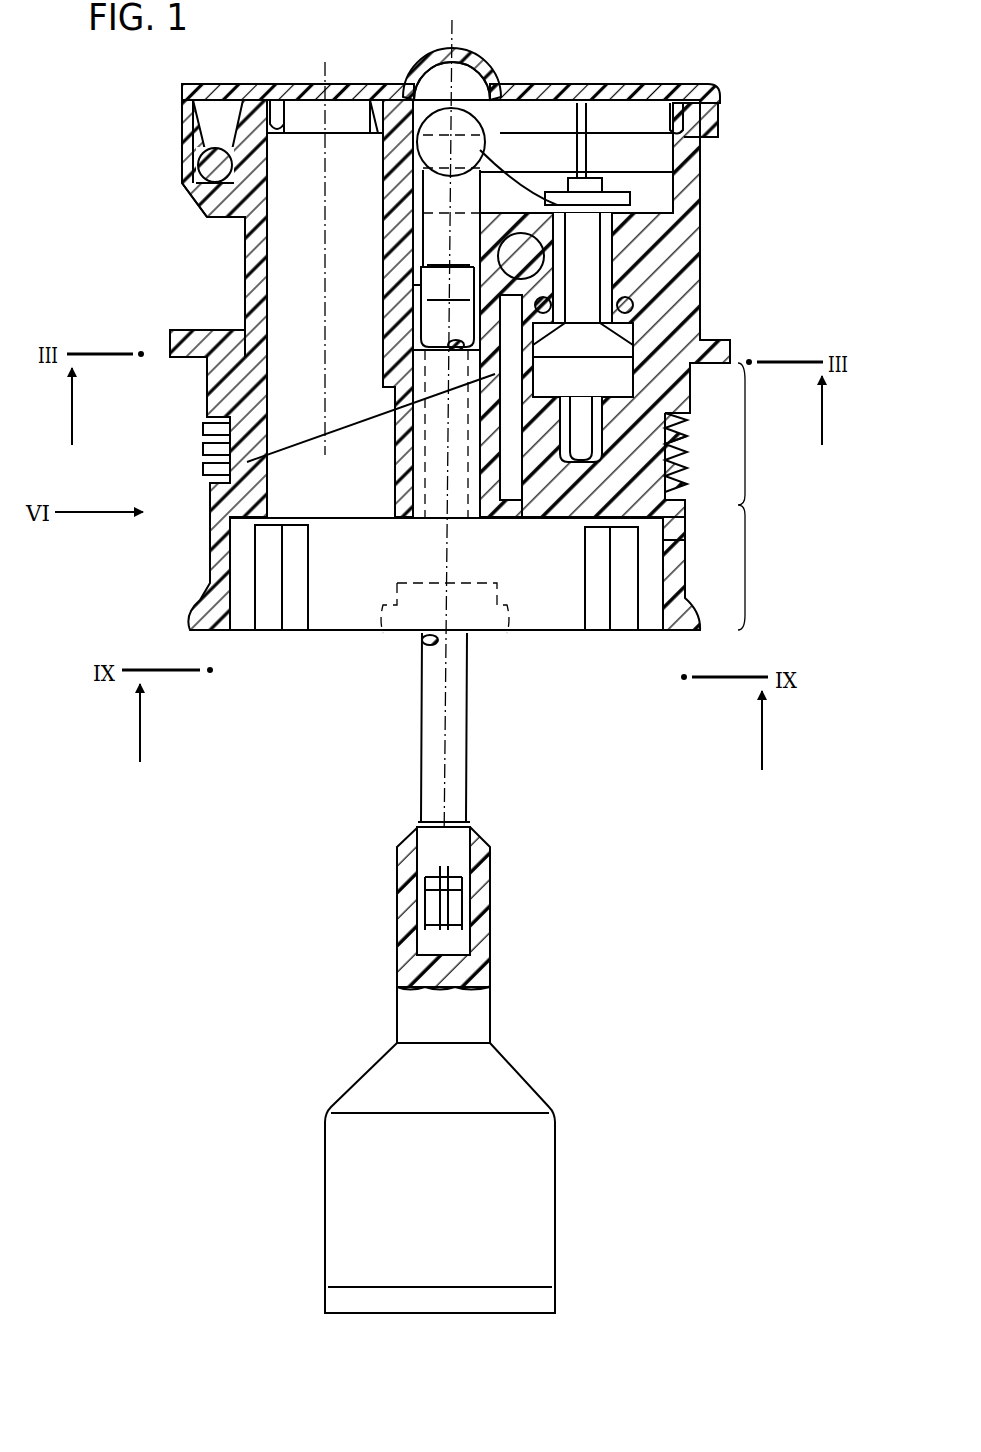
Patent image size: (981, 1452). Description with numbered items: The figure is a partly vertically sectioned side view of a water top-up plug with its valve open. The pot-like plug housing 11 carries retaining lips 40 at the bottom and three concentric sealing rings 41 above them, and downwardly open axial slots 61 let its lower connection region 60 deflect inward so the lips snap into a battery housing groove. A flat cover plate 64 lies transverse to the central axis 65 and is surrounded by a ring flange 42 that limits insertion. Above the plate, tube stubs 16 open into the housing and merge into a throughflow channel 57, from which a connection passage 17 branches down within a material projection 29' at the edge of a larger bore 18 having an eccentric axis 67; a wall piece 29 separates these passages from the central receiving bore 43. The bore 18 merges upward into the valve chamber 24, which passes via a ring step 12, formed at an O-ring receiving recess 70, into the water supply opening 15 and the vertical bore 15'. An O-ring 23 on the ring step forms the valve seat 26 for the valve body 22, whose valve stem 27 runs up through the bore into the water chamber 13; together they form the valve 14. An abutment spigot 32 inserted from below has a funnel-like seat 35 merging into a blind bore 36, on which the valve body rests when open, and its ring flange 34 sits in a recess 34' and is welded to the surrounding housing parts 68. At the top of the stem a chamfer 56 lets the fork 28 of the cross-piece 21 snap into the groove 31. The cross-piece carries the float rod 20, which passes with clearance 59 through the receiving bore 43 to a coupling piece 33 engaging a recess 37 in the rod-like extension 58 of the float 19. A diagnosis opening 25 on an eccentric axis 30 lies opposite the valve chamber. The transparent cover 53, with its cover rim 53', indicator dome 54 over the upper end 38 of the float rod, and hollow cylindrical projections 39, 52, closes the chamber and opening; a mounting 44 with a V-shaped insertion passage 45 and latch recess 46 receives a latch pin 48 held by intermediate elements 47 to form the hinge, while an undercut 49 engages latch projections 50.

The plug housing 11 is at (190, 366).
The ring step 12 is at (640, 292).
The water chamber 13 is at (700, 184).
The valve 14 is at (690, 386).
The water supply opening 15 is at (566, 365).
The vertical bore 15' is at (382, 273).
The tube stubs 16 is at (410, 182).
The connection passage 17 is at (480, 350).
The bore 18 is at (688, 441).
The float 19 is at (553, 1186).
The float rod 20 is at (468, 702).
The cross-piece 21 is at (515, 190).
The valve body 22 is at (690, 411).
The O-ring 23 is at (634, 306).
The valve chamber 24 is at (700, 324).
The diagnosis opening 25 is at (262, 236).
The valve seat 26 is at (425, 350).
The valve stem 27 is at (668, 242).
The fork 28 is at (660, 176).
The wall piece 29 is at (410, 253).
The material projection 29' is at (371, 417).
The eccentric axis 30 is at (322, 62).
The groove 31 is at (586, 186).
The abutment spigot 32 is at (688, 494).
The coupling piece 33 is at (465, 906).
The ring flange 34 is at (704, 569).
The recess 34' is at (698, 525).
The seat 35 is at (560, 382).
The blind bore 36 is at (688, 466).
The recess 37 is at (490, 851).
The upper end 38 is at (480, 110).
The hollow cylindrical projection 39 is at (278, 132).
The retaining lips 40 is at (196, 616).
The sealing rings 41 is at (203, 469).
The ring flange 42 is at (170, 345).
The receiving bore 43 is at (398, 425).
The mounting 44 is at (200, 196).
The insertion passage 45 is at (182, 113).
The latch recess 46 is at (199, 160).
The intermediate elements 47 is at (218, 113).
The latch pin 48 is at (196, 170).
The undercut 49 is at (720, 120).
The latch projections 50 is at (722, 91).
The hollow cylindrical projection 52 is at (409, 98).
The cover 53 is at (451, 71).
The cover rim 53' is at (737, 146).
The indicator dome 54 is at (452, 48).
The chamfer 56 is at (580, 170).
The throughflow channel 57 is at (498, 248).
The rod-like extension 58 is at (478, 1002).
The clearance 59 is at (425, 266).
The connection region 60 is at (758, 496).
The axial slots 61 is at (290, 641).
The cover plate 64 is at (230, 327).
The central axis 65 is at (470, 78).
The eccentric axis 67 is at (594, 92).
The housing parts 68 is at (216, 550).
The O-ring receiving recess 70 is at (450, 342).